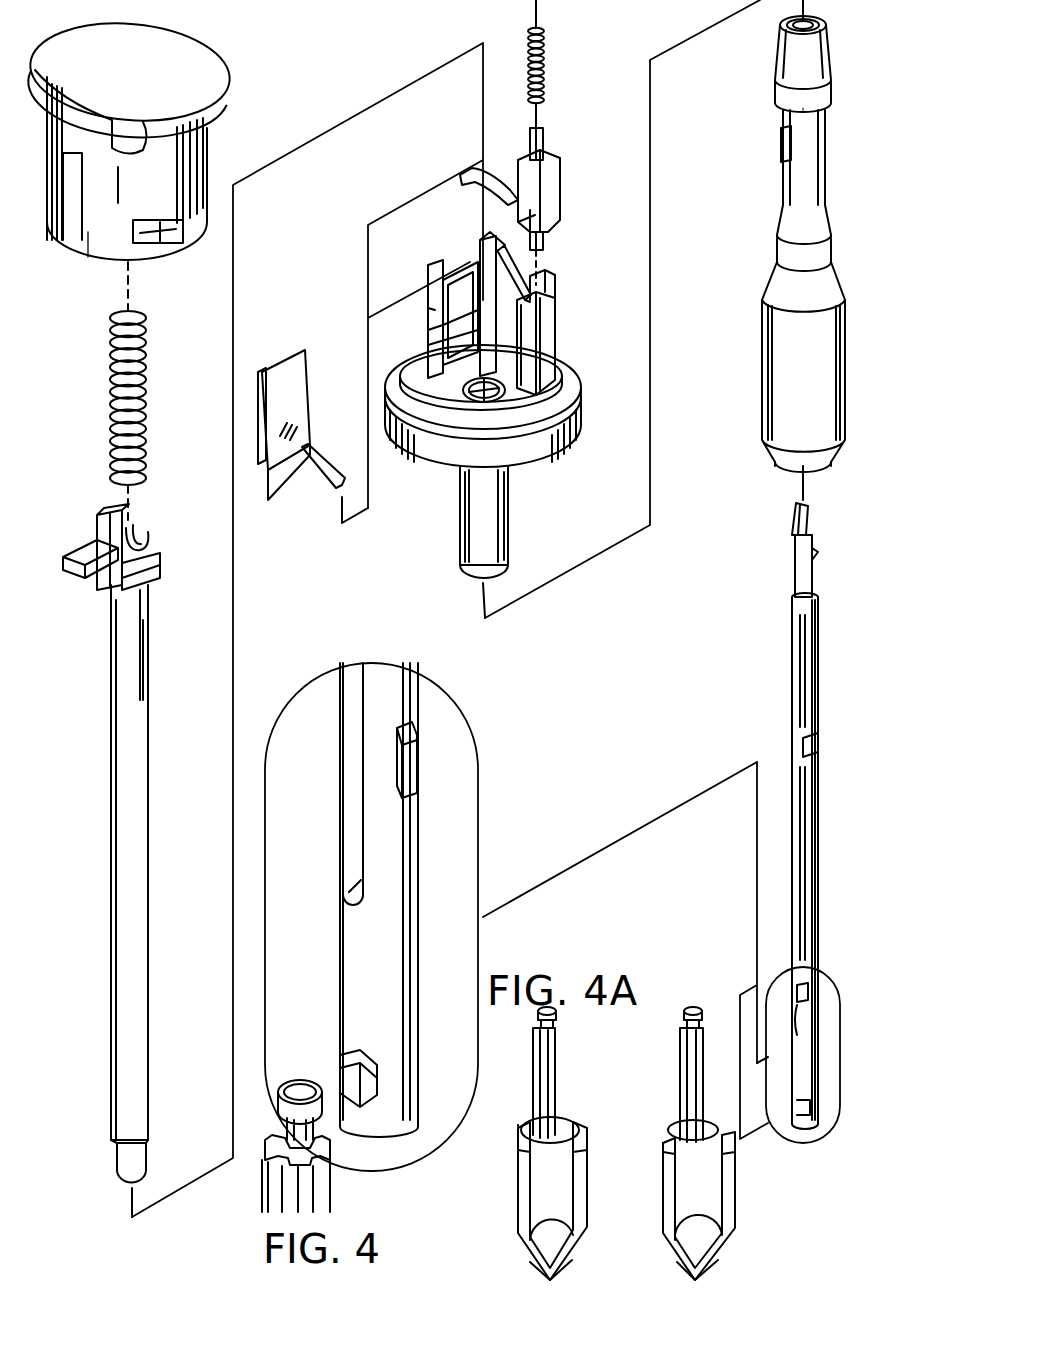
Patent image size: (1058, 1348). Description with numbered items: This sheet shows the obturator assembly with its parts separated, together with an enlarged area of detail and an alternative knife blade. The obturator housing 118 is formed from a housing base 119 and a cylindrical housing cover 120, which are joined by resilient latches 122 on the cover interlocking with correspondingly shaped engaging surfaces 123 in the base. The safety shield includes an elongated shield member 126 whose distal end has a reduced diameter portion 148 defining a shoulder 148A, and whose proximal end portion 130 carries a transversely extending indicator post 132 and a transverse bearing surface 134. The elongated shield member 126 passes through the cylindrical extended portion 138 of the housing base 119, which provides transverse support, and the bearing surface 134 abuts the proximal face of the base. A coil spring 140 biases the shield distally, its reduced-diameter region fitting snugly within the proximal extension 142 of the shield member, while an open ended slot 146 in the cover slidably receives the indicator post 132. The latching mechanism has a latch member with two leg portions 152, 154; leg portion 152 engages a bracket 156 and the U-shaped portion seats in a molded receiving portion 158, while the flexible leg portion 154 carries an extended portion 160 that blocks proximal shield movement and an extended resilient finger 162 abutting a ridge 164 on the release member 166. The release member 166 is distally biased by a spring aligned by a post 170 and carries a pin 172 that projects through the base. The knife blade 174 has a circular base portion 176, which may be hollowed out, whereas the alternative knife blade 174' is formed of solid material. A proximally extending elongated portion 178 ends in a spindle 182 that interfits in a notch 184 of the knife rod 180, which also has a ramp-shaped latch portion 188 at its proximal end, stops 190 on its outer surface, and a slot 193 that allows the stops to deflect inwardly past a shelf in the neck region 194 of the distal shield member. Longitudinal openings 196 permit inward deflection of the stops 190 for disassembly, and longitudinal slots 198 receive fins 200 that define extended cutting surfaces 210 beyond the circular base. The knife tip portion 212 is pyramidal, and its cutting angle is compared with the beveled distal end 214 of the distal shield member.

In FIG. 3, the obturator housing 118 is at (445, 512).
In FIG. 3, the housing base 119 is at (555, 375).
In FIG. 3, the cylindrical housing cover 120 is at (148, 83).
In FIG. 3, the resilient latches 122 is at (60, 246).
In FIG. 3, the engaging surfaces 123 is at (408, 340).
In FIG. 3, the elongated shield member 126 is at (116, 830).
In FIG. 3, the proximal end portion 130 is at (112, 580).
In FIG. 3, the indicator post 132 is at (88, 548).
In FIG. 3, the transverse bearing surface 134 is at (160, 560).
In FIG. 3, the cylindrical extended portion 138 is at (487, 515).
In FIG. 3, the coil spring 140 is at (110, 398).
In FIG. 3, the proximal extension 142 is at (142, 530).
In FIG. 3, the open ended slot 146 is at (84, 255).
In FIG. 3, the reduced diameter portion 148 is at (124, 1158).
In FIG. 3, the shoulder 148A is at (152, 1150).
In FIG. 3, the leg portion 152 is at (258, 460).
In FIG. 3, the leg portion 154 is at (297, 398).
In FIG. 3, the bracket 156 is at (430, 300).
In FIG. 3, the molded receiving portion 158 is at (480, 243).
In FIG. 3, the extended portion 160 is at (282, 488).
In FIG. 3, the extended resilient finger 162 is at (327, 465).
In FIG. 3, the ridge 164 is at (460, 178).
In FIG. 3, the release member 166 is at (540, 200).
In FIG. 3, the post 170 is at (541, 150).
In FIG. 3, the pin 172 is at (545, 240).
In FIG. 4A, the knife blade 174 is at (632, 1117).
In FIG. 4A, the knife blade 174' is at (464, 1189).
In FIG. 4A, the circular base portion 176 is at (571, 1198).
In FIG. 4, the elongated portion 178 is at (290, 1182).
In FIG. 4A, the elongated portion 178 is at (548, 1075).
In FIG. 3, the knife rod 180 is at (797, 745).
In FIG. 4, the spindle 182 is at (322, 1145).
In FIG. 4A, the spindle 182 is at (540, 1013).
In FIG. 4, the notch 184 is at (342, 1062).
In FIG. 3, the latch portion 188 is at (796, 508).
In FIG. 3, the stops 190 is at (812, 990).
In FIG. 4, the stops 190 is at (412, 770).
In FIG. 3, the slot 193 is at (808, 1030).
In FIG. 4, the slot 193 is at (362, 850).
In FIG. 3, the neck region 194 is at (806, 158).
In FIG. 3, the longitudinal openings 196 is at (782, 145).
In FIG. 3, the longitudinal slots 198 is at (780, 370).
In FIG. 4A, the fins 200 is at (518, 1176).
In FIG. 4A, the extended cutting surfaces 210 is at (540, 1262).
In FIG. 4A, the knife tip portion 212 is at (560, 1245).
In FIG. 3, the beveled distal end 214 is at (818, 462).